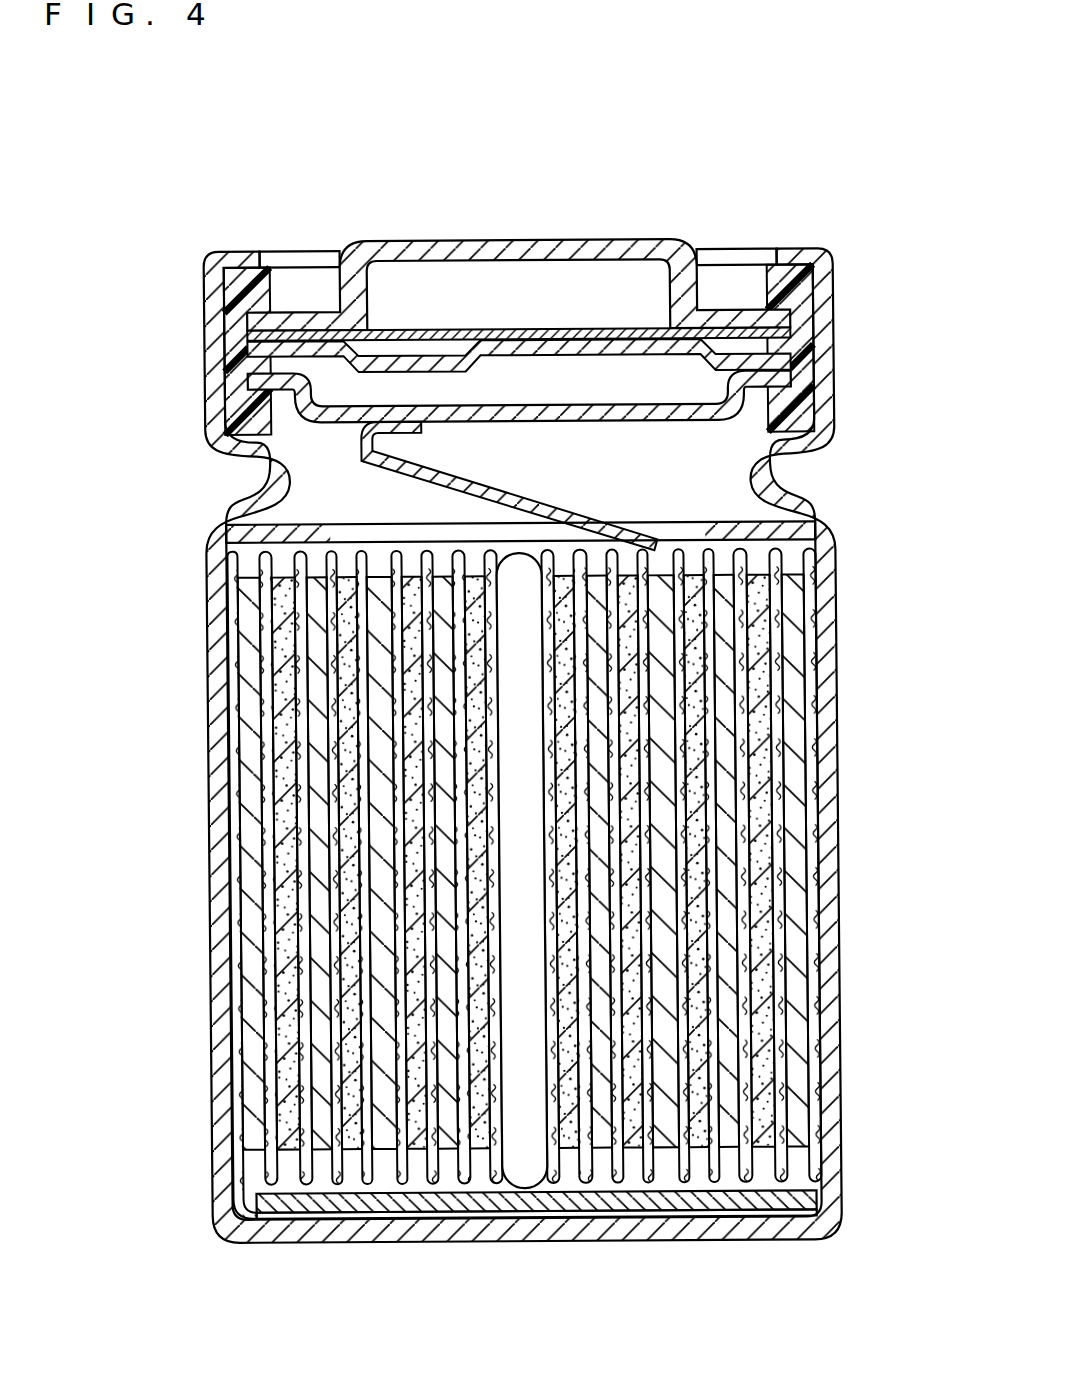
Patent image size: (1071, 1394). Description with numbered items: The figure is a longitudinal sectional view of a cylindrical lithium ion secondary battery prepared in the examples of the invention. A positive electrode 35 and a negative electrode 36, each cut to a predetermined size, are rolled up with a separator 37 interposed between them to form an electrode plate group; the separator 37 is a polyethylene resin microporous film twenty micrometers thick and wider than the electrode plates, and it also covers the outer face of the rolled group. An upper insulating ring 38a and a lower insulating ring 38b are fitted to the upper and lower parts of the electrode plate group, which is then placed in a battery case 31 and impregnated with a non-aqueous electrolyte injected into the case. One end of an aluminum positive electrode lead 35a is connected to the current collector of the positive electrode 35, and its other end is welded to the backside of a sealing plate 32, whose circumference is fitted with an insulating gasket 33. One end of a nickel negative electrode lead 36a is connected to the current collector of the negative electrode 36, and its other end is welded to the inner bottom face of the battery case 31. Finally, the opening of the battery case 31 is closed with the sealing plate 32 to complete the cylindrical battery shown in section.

The battery case 31 is at (214, 720).
The sealing plate 32 is at (423, 244).
The insulating gasket 33 is at (803, 340).
The positive electrode 35 is at (756, 973).
The positive electrode lead 35a is at (564, 518).
The negative electrode 36 is at (787, 911).
The negative electrode lead 36a is at (574, 1217).
The separator 37 is at (817, 781).
The upper insulating ring 38a is at (811, 532).
The lower insulating ring 38b is at (784, 1206).